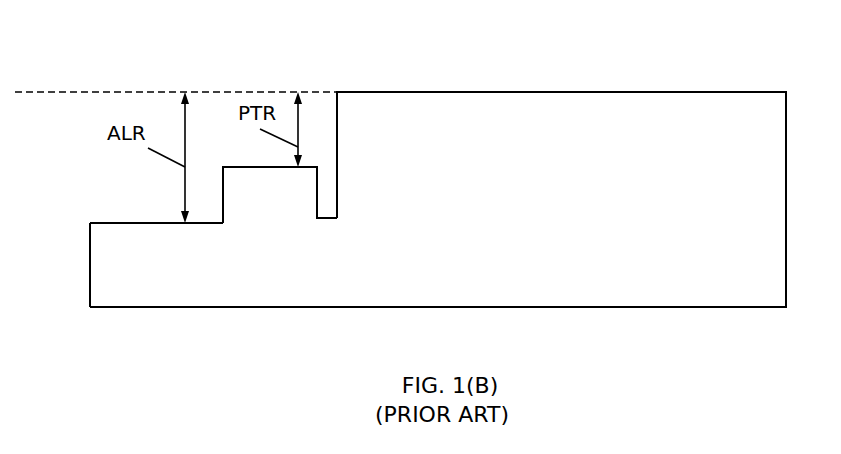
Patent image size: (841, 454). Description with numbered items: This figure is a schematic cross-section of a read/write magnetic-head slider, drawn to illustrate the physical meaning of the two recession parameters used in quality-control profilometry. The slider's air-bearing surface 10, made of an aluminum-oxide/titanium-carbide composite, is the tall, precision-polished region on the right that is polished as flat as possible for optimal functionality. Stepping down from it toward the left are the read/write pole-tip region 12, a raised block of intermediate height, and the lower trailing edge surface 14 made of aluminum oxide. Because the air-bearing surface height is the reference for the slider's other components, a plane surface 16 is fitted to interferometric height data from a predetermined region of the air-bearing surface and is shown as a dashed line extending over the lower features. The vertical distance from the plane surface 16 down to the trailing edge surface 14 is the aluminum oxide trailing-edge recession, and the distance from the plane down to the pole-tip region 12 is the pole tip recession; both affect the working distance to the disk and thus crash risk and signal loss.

The air-bearing surface 10 is at (562, 92).
The read/write pole-tip region 12 is at (260, 167).
The trailing edge surface 14 is at (167, 223).
The plane surface 16 is at (91, 92).